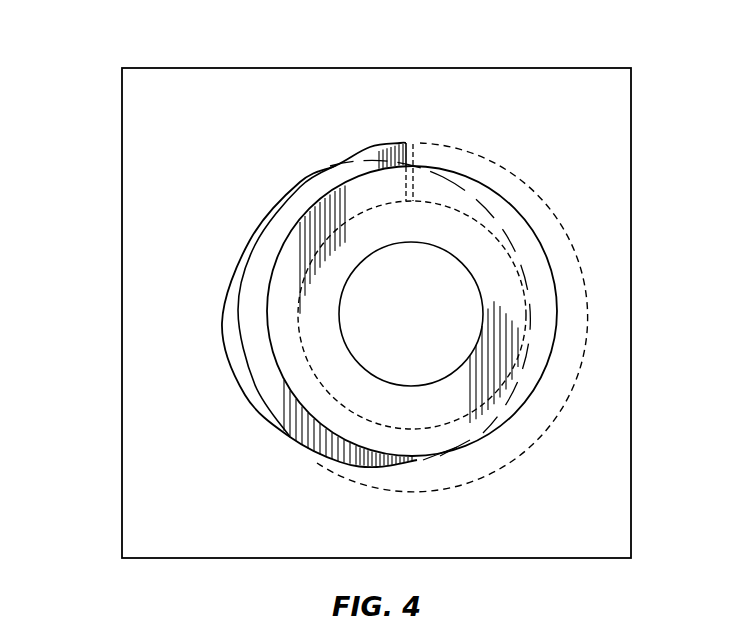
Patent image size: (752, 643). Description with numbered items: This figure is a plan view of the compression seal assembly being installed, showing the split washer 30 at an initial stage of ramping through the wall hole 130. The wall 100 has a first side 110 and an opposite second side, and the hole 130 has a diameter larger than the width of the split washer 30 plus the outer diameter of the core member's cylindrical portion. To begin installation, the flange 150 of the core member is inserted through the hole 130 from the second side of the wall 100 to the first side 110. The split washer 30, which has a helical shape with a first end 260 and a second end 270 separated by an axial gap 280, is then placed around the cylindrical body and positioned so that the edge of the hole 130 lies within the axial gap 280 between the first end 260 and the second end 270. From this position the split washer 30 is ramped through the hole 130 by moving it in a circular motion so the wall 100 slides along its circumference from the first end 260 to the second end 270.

The wall 100 is at (72, 103).
The first side 110 is at (192, 105).
The split washer 30 is at (257, 290).
The hole 130 is at (232, 328).
The flange 150 is at (543, 318).
The first end 260 is at (382, 148).
The axial gap 280 is at (409, 139).
The second end 270 is at (445, 141).